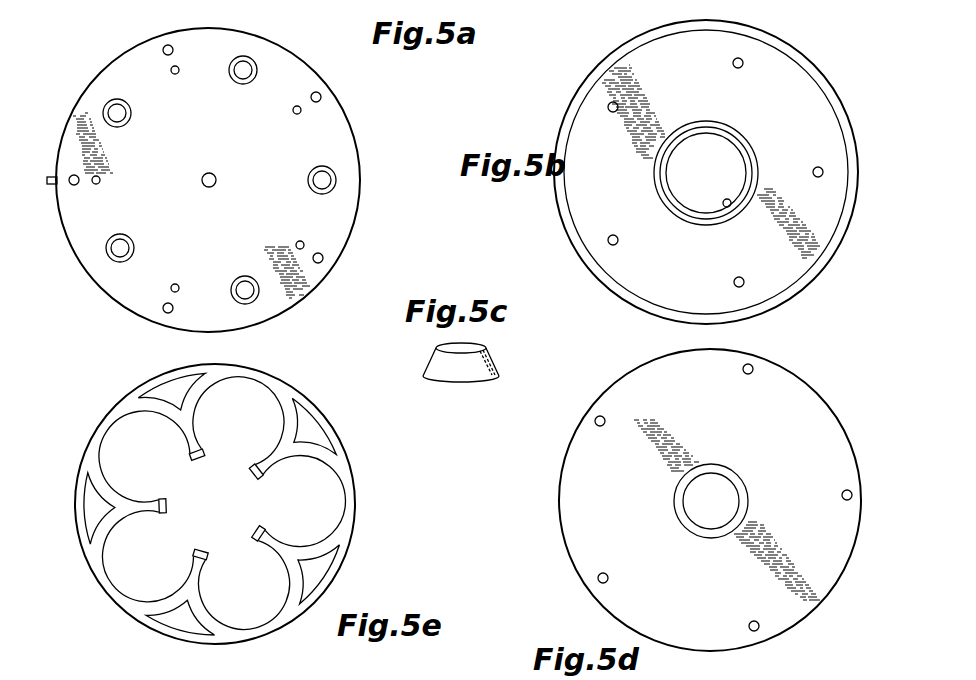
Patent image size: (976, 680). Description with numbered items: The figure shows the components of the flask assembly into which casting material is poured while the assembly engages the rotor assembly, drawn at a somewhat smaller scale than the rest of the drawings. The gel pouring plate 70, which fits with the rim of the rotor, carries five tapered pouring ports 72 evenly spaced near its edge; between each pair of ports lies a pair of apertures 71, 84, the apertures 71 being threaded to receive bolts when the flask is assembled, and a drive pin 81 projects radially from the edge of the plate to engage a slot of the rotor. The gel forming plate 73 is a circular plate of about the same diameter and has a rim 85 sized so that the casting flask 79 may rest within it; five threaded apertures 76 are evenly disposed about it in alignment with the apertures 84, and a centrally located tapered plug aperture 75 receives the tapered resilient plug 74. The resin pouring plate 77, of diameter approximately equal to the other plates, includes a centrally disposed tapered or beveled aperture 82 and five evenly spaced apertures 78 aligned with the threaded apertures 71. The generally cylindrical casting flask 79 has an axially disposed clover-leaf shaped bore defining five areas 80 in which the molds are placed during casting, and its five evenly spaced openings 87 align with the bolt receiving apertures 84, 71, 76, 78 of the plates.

In FIG. 5A, the gel pouring plate 70 is at (346, 134).
In FIG. 5A, the threaded apertures 71 is at (163, 50).
In FIG. 5A, the tapered pouring ports 72 is at (117, 108).
In FIG. 5B, the gel forming plate 73 is at (808, 97).
In FIG. 5C, the tapered resilient plug 74 is at (496, 364).
In FIG. 5B, the tapered plug aperture 75 is at (731, 206).
In FIG. 5B, the threaded apertures 76 is at (743, 62).
In FIG. 5D, the resin pouring plate 77 is at (590, 466).
In FIG. 5D, the apertures 78 is at (752, 367).
In FIG. 5E, the casting flask 79 is at (345, 472).
In FIG. 5E, the areas 80 is at (260, 400).
In FIG. 5A, the drive pin 81 is at (50, 178).
In FIG. 5D, the tapered or beveled aperture 82 is at (685, 506).
In FIG. 5A, the apertures 84 is at (100, 180).
In FIG. 5B, the rim 85 is at (625, 50).
In FIG. 5E, the openings 87 is at (168, 392).